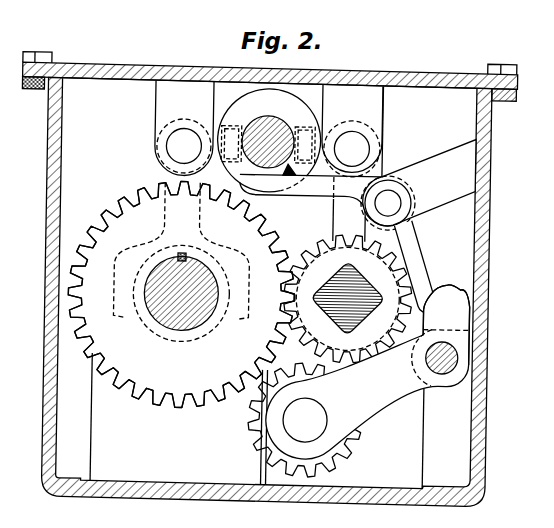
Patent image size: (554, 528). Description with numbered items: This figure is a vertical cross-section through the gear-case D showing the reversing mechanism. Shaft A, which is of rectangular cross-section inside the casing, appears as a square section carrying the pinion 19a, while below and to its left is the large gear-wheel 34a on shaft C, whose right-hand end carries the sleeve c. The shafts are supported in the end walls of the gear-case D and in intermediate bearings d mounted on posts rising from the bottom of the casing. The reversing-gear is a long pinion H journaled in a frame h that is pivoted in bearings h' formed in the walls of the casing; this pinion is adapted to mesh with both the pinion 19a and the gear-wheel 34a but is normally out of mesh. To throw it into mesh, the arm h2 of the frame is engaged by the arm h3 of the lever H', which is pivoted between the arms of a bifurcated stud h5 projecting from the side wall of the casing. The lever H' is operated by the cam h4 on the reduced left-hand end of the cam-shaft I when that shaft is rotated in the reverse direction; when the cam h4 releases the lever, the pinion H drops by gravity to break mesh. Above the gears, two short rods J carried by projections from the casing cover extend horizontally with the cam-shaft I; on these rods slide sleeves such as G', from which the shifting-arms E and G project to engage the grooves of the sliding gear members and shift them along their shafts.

The gear-case D is at (485, 298).
The intermediate bearings d is at (96, 461).
The shifting-arm G is at (181, 291).
The sleeve G' is at (248, 201).
The short rods J is at (166, 148).
The sleeve c is at (163, 324).
The gear-wheel 34a is at (154, 394).
The cam-shaft I is at (277, 196).
The cam h4 is at (289, 178).
The lever H' is at (310, 207).
The shifting-arm E is at (333, 213).
The pinion 19a is at (324, 238).
The shaft A is at (348, 299).
The long pinion H is at (305, 420).
The frame h is at (367, 372).
The bearings h' is at (435, 370).
The arm h2 is at (446, 298).
The arm h3 is at (414, 230).
The bifurcated stud h5 is at (438, 152).